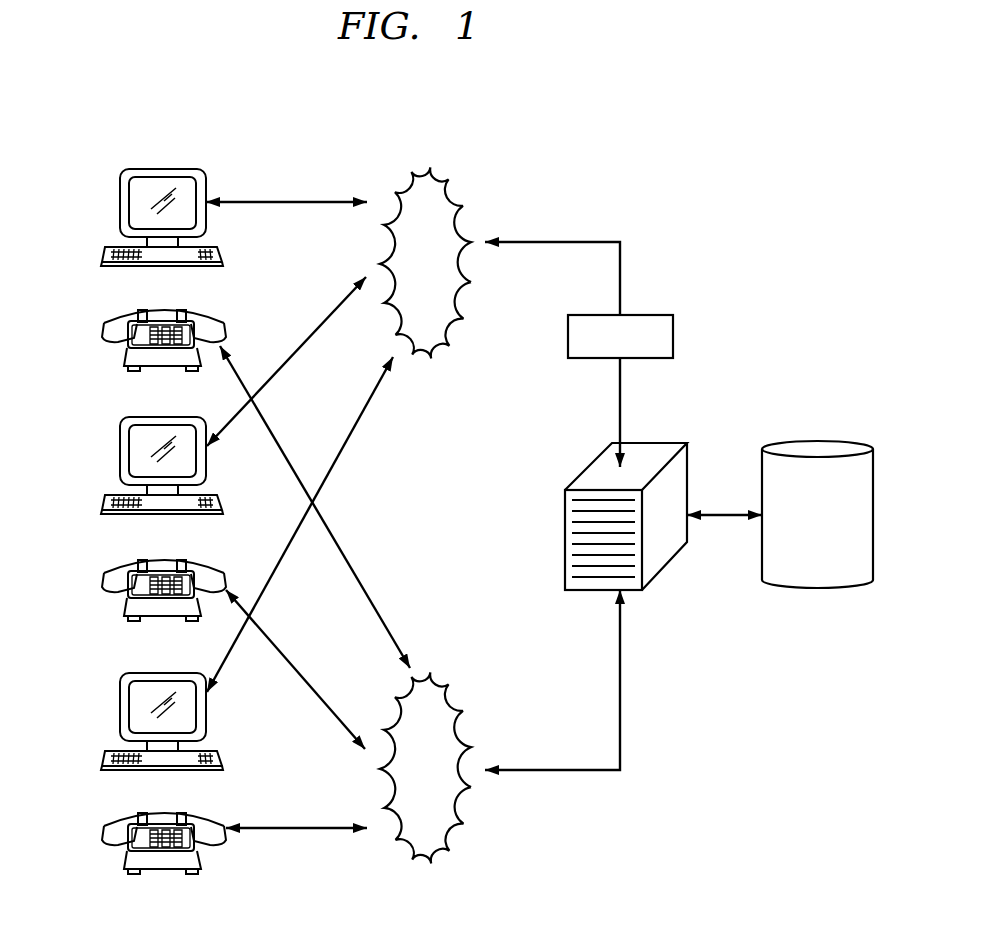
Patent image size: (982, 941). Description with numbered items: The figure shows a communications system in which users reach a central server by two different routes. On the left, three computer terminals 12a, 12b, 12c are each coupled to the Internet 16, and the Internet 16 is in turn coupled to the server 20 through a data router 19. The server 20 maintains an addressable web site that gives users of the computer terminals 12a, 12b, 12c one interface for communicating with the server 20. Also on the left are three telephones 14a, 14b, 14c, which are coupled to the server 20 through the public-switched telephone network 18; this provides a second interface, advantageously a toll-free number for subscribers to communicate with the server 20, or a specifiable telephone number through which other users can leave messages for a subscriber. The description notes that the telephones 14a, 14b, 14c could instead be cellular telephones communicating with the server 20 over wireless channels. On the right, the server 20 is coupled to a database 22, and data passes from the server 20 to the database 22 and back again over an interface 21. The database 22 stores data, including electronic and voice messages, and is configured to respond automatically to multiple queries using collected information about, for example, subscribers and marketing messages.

The computer terminal 12a is at (120, 200).
The computer terminal 12b is at (120, 448).
The computer terminal 12c is at (120, 704).
The telephone 14a is at (104, 322).
The telephone 14b is at (104, 572).
The telephone 14c is at (104, 826).
The Internet 16 is at (470, 212).
The public-switched telephone network 18 is at (470, 715).
The data router 19 is at (650, 315).
The server 20 is at (565, 527).
The interface 21 is at (725, 511).
The database 22 is at (822, 441).